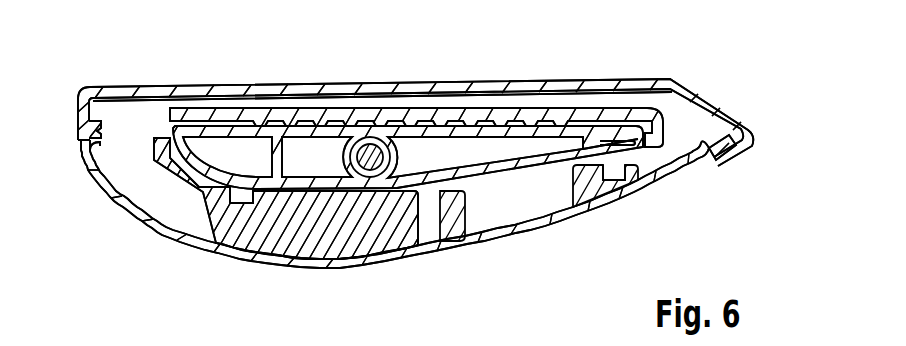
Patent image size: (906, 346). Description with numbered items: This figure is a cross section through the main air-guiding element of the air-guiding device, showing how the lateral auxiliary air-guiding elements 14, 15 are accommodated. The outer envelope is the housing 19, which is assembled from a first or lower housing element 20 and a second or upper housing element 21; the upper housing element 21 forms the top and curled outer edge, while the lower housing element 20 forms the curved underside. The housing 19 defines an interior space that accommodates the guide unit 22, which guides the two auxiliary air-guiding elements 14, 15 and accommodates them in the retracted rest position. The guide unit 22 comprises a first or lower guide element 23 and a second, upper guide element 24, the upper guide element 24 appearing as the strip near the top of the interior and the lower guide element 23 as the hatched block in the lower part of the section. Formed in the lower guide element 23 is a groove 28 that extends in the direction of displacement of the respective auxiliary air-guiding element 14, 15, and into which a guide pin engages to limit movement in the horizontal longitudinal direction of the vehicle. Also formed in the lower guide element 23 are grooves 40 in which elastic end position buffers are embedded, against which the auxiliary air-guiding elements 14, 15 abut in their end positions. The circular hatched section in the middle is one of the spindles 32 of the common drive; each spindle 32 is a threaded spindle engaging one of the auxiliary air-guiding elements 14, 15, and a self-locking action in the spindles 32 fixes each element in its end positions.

The auxiliary air-guiding element 14 is at (451, 151).
The auxiliary air-guiding element 15 is at (451, 151).
The housing 19 is at (415, 175).
The lower housing element 20 is at (408, 234).
The upper housing element 21 is at (415, 92).
The guide unit 22 is at (451, 175).
The lower guide element 23 is at (451, 202).
The upper guide element 24 is at (451, 151).
The groove 28 is at (428, 236).
The spindle 32 is at (371, 154).
The groove 40 is at (622, 158).